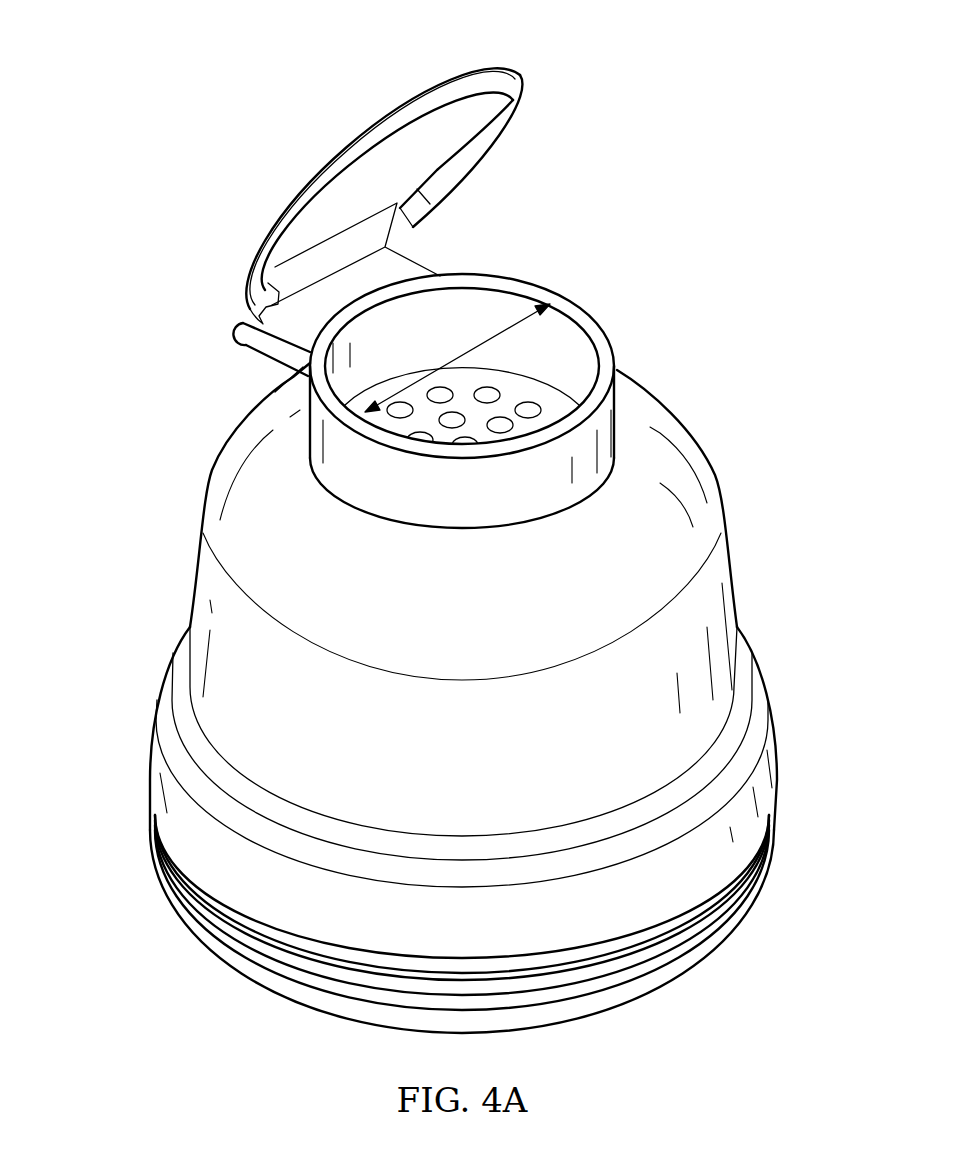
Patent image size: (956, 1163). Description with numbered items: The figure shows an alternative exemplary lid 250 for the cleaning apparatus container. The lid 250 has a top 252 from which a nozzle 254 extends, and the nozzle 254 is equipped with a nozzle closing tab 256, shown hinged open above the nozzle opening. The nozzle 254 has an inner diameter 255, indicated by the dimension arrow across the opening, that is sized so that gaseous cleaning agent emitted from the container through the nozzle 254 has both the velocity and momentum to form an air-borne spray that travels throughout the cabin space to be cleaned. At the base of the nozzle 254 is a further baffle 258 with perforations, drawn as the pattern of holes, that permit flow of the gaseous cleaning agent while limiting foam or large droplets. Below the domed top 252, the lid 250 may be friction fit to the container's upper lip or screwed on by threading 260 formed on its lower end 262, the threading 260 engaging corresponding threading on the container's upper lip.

The lid 250 is at (736, 583).
The top 252 is at (668, 424).
The nozzle 254 is at (604, 322).
The inner diameter 255 is at (462, 352).
The nozzle closing tab 256 is at (497, 68).
The further baffle 258 is at (541, 393).
The threading 260 is at (135, 855).
The lower end 262 is at (789, 800).